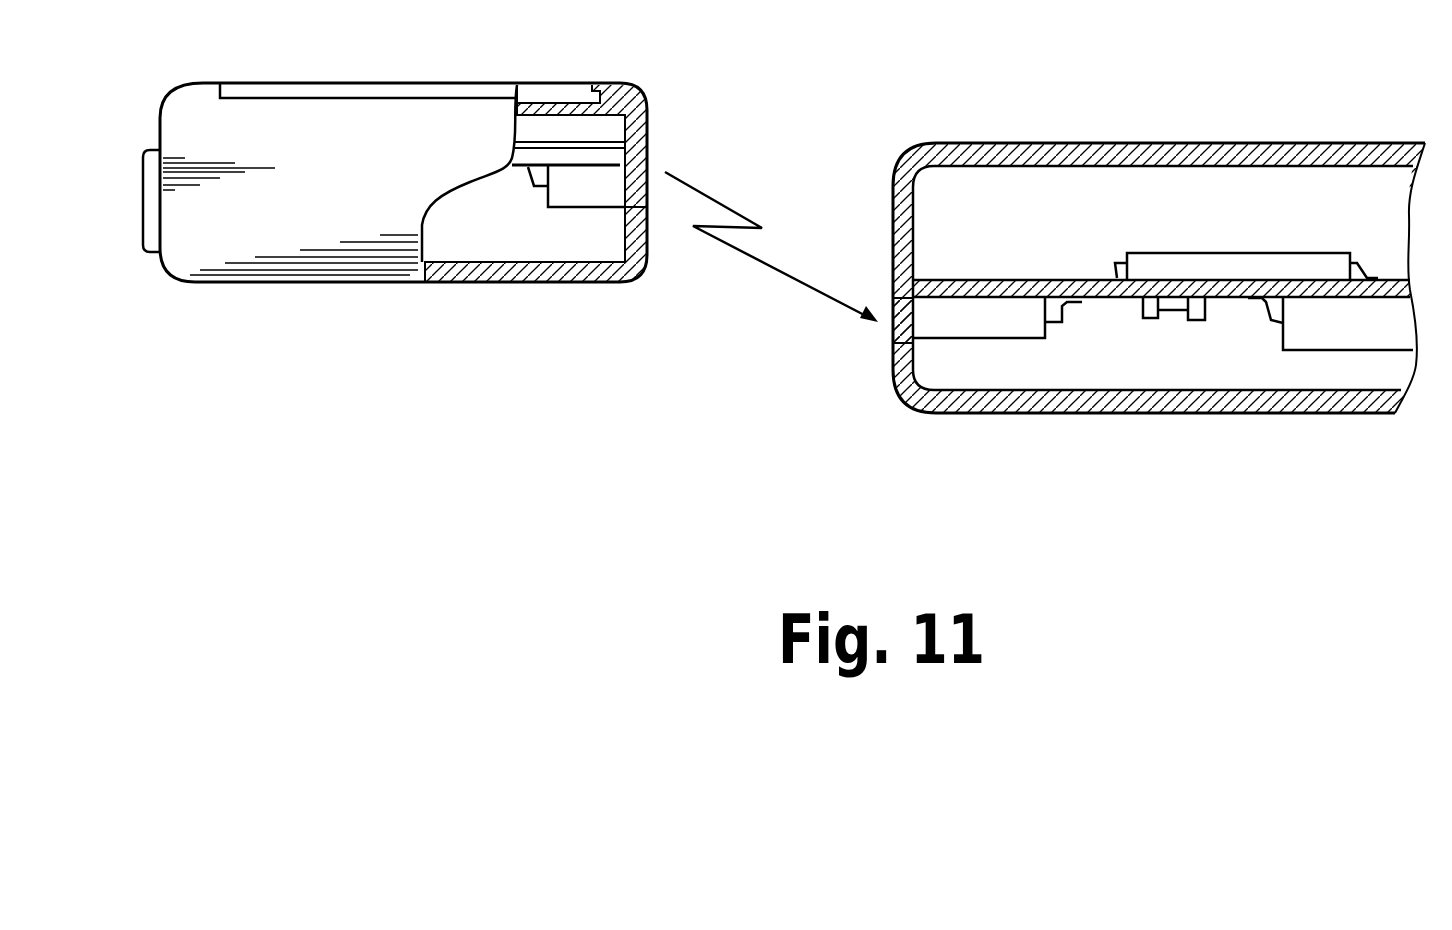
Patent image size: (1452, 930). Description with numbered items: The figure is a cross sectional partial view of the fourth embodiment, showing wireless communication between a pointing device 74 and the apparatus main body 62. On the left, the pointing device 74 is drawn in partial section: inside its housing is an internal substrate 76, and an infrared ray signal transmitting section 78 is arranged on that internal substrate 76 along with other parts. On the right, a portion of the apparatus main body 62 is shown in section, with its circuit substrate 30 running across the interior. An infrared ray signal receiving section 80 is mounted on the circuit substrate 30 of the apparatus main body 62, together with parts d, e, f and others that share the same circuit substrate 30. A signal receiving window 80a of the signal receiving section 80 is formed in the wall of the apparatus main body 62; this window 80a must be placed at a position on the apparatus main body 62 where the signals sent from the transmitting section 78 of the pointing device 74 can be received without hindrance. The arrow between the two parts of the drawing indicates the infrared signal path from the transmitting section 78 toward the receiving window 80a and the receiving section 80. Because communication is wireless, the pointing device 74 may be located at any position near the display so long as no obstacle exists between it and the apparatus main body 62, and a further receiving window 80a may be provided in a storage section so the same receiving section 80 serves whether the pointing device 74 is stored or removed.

The pointing device 74 is at (247, 280).
The internal substrate 76 is at (543, 153).
The infrared ray signal transmitting section 78 is at (600, 192).
The apparatus main body 62 is at (1202, 147).
The circuit substrate 30 is at (1108, 298).
The infrared ray signal receiving section 80 is at (1010, 322).
The signal receiving window 80a is at (893, 329).
The part f is at (1278, 267).
The part d is at (1193, 320).
The part e is at (1312, 350).